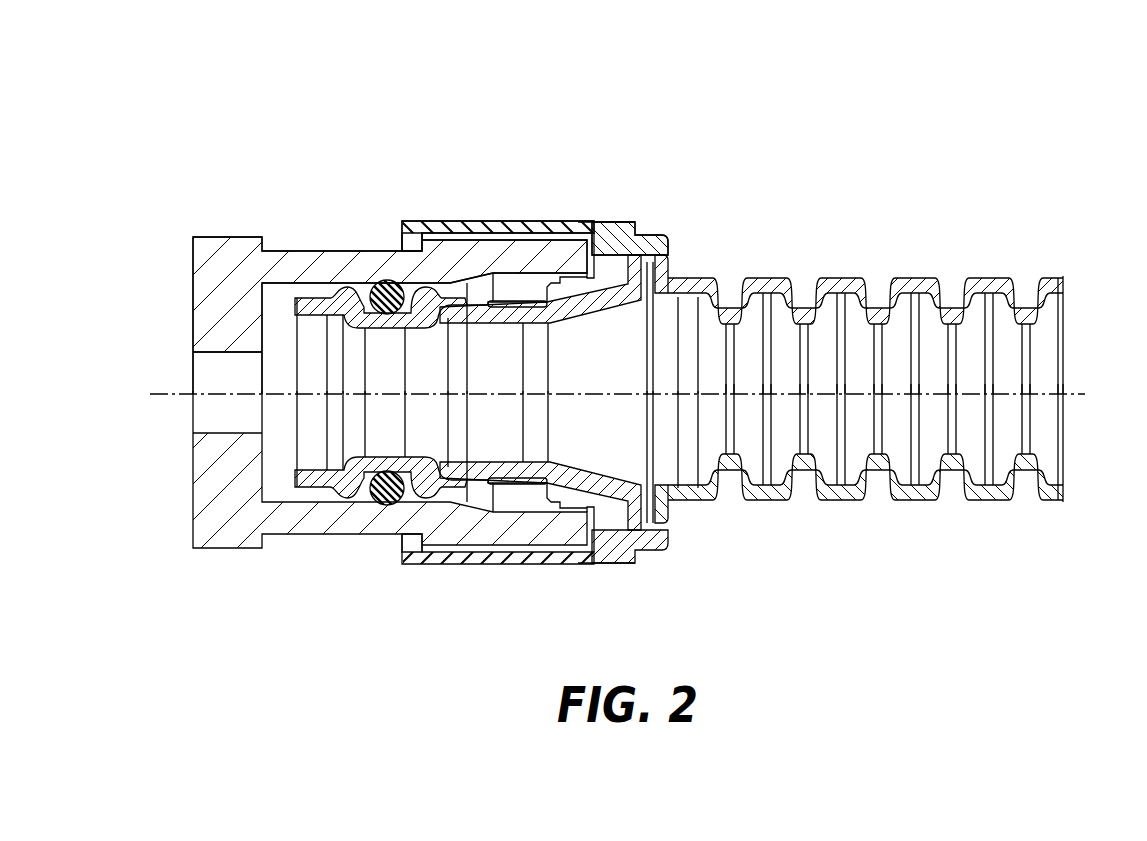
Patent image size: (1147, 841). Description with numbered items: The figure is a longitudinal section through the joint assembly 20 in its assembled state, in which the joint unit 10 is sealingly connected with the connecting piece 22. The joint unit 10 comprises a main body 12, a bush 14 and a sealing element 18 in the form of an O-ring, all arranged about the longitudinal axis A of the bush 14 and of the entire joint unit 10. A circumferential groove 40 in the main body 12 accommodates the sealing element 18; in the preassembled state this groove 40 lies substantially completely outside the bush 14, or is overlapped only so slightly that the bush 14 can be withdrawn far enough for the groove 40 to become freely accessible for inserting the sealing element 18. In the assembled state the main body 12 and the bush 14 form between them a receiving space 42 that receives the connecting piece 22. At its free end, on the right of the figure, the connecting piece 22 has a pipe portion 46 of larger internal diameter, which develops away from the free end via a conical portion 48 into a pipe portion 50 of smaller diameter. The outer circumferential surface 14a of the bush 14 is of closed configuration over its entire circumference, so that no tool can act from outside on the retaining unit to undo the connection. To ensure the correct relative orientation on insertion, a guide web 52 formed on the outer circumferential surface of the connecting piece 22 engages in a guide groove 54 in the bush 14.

The joint unit 10 is at (982, 150).
The main body 12 is at (661, 526).
The bush 14 is at (641, 220).
The outer circumferential surface 14a is at (578, 217).
The sealing element 18 is at (395, 507).
The joint assembly 20 is at (126, 136).
The connecting piece 22 is at (216, 544).
The circumferential groove 40 is at (367, 507).
The receiving space 42 is at (526, 504).
The pipe portion of larger internal diameter 46 is at (576, 526).
The conical portion 48 is at (481, 498).
The pipe portion of smaller diameter 50 is at (298, 524).
The guide web 52 is at (456, 256).
The guide groove 54 is at (400, 240).
The longitudinal axis A is at (1078, 395).